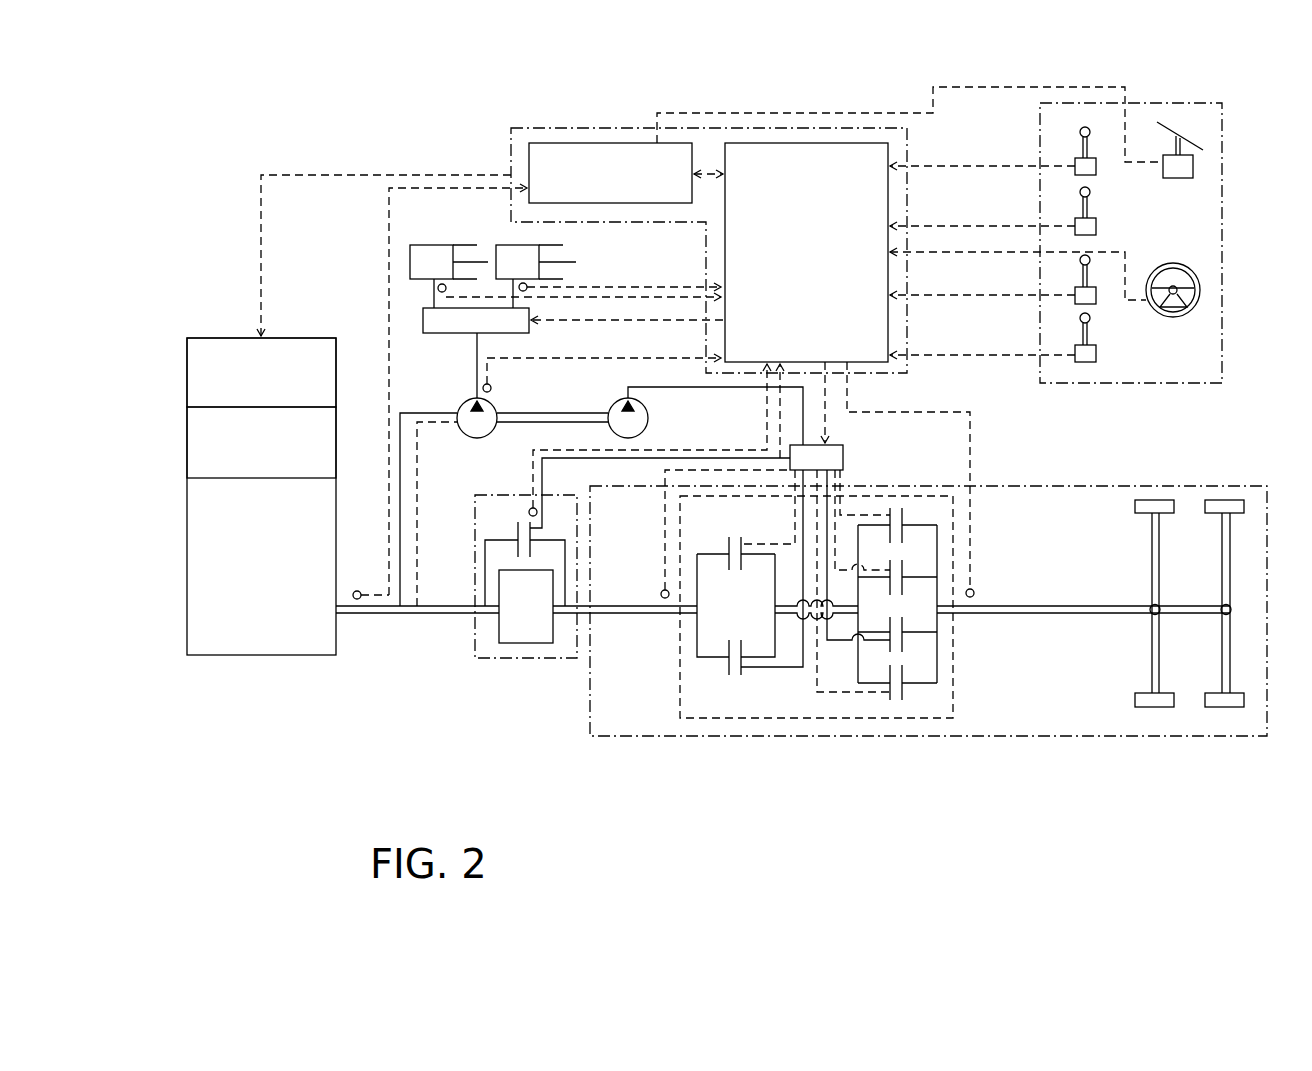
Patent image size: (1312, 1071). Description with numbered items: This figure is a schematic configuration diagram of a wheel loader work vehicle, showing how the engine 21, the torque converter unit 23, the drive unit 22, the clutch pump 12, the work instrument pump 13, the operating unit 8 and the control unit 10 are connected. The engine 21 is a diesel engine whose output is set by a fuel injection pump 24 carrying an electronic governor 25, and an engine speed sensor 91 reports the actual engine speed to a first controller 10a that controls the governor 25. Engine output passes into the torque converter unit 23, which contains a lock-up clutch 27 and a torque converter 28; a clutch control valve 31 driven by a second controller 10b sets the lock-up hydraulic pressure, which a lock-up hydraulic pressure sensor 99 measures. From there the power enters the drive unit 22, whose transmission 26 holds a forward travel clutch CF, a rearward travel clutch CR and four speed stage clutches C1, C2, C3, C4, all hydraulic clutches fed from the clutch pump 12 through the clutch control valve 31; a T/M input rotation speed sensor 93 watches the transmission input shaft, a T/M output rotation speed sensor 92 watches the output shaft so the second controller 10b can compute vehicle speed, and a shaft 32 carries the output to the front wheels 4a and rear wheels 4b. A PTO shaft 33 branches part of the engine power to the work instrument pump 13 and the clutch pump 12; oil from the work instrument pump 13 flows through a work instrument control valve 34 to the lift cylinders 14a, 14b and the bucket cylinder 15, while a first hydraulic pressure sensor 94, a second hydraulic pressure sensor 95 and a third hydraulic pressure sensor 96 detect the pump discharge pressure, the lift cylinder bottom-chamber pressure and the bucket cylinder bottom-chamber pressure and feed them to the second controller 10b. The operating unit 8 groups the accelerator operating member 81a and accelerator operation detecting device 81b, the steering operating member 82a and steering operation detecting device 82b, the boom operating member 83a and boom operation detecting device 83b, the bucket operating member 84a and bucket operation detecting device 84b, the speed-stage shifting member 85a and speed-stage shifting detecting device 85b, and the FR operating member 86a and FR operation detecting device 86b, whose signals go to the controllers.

The front wheels 4a is at (1156, 500).
The rear wheels 4b is at (1226, 500).
The operating unit 8 is at (1137, 385).
The control unit 10 is at (709, 219).
The first controller 10a is at (616, 141).
The second controller 10b is at (815, 141).
The clutch pump 12 is at (648, 425).
The work instrument pump 13 is at (457, 405).
The lift cylinder 14a is at (388, 265).
The lift cylinder 14b is at (410, 256).
The bucket cylinder 15 is at (513, 248).
The engine 21 is at (187, 572).
The drive unit 22 is at (1058, 484).
The torque converter unit 23 is at (497, 608).
The fuel injection pump 24 is at (187, 440).
The electronic governor 25 is at (187, 372).
The transmission 26 is at (830, 646).
The lock-up clutch 27 is at (513, 528).
The torque converter 28 is at (499, 628).
The clutch control valve 31 is at (845, 457).
The shaft 32 is at (1060, 614).
The PTO shaft 33 is at (412, 443).
The work instrument control valve 34 is at (423, 318).
The accelerator operating member 81a is at (1190, 135).
The accelerator operation detecting device 81b is at (1195, 165).
The steering operating member 82a is at (1185, 265).
The steering operation detecting device 82b is at (1168, 280).
The boom operating member 83a is at (1080, 132).
The boom operation detecting device 83b is at (1075, 161).
The bucket operating member 84a is at (1080, 192).
The bucket operation detecting device 84b is at (1121, 210).
The speed-stage shifting member 85a is at (1080, 265).
The speed-stage shifting detecting device 85b is at (1097, 298).
The FR operating member 86a is at (1080, 327).
The FR operation detecting device 86b is at (1097, 355).
The engine speed sensor 91 is at (358, 590).
The T/M output rotation speed sensor 92 is at (975, 592).
The T/M input rotation speed sensor 93 is at (661, 593).
The first hydraulic pressure sensor 94 is at (493, 389).
The second hydraulic pressure sensor 95 is at (430, 287).
The third hydraulic pressure sensor 96 is at (517, 280).
The lock-up hydraulic pressure sensor 99 is at (529, 506).
The speed stage clutch C1 is at (903, 528).
The speed stage clutch C2 is at (903, 585).
The speed stage clutch C3 is at (903, 640).
The speed stage clutch C4 is at (903, 690).
The forward travel clutch CF is at (736, 580).
The rearward travel clutch CR is at (730, 657).